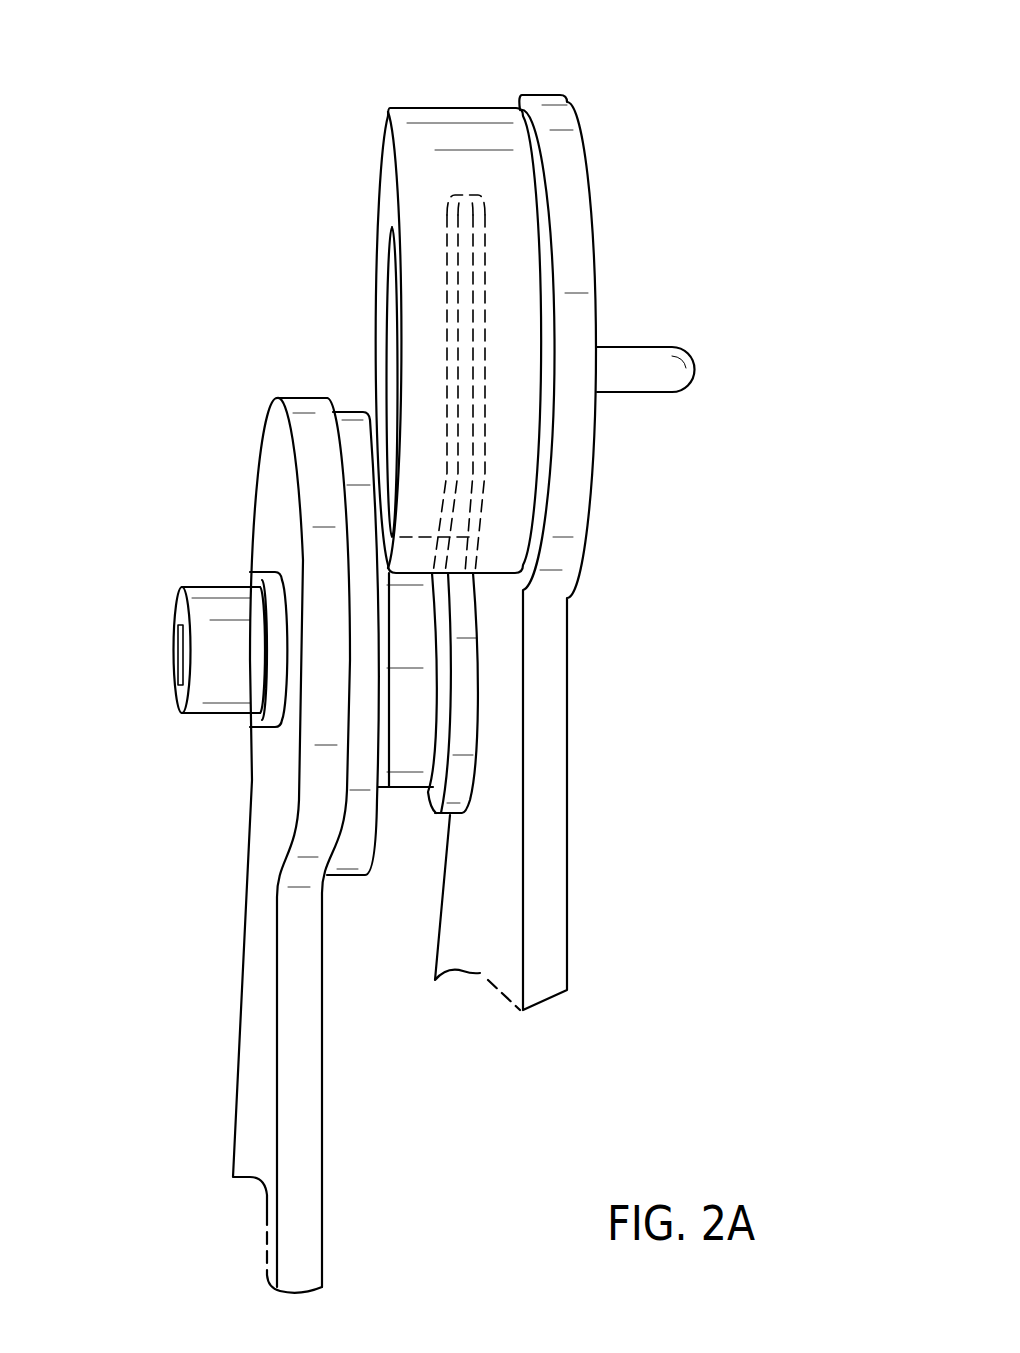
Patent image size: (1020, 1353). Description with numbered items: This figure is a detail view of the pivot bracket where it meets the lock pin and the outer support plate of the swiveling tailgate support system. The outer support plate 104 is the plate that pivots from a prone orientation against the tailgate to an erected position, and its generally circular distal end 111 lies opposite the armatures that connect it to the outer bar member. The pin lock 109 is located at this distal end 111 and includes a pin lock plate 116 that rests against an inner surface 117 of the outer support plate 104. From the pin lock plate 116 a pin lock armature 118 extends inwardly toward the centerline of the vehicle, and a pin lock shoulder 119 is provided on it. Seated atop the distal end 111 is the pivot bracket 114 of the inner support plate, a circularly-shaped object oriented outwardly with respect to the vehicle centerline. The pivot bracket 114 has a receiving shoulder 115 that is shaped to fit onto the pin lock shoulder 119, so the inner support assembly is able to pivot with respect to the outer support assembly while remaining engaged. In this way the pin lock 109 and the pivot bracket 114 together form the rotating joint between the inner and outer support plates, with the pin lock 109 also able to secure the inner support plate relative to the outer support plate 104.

The outer support plate 104 is at (252, 1043).
The pin lock 109 is at (190, 603).
The distal end 111 is at (298, 397).
The pivot bracket 114 is at (458, 108).
The receiving shoulder 115 is at (483, 245).
The pin lock plate 116 is at (348, 872).
The inner surface 117 is at (322, 1102).
The pin lock armature 118 is at (400, 775).
The pin lock shoulder 119 is at (458, 798).